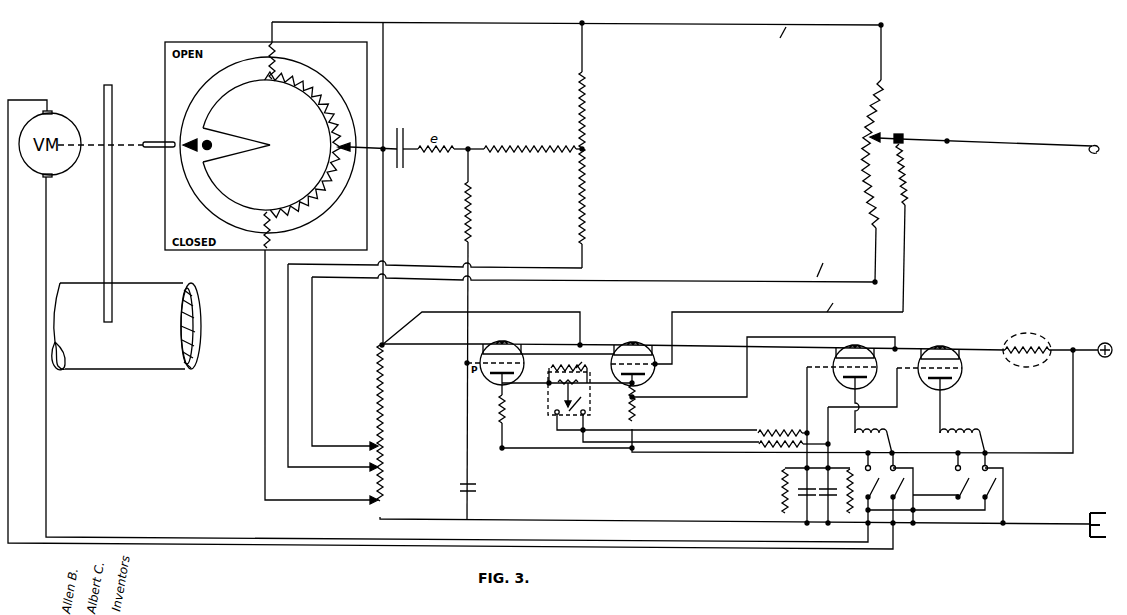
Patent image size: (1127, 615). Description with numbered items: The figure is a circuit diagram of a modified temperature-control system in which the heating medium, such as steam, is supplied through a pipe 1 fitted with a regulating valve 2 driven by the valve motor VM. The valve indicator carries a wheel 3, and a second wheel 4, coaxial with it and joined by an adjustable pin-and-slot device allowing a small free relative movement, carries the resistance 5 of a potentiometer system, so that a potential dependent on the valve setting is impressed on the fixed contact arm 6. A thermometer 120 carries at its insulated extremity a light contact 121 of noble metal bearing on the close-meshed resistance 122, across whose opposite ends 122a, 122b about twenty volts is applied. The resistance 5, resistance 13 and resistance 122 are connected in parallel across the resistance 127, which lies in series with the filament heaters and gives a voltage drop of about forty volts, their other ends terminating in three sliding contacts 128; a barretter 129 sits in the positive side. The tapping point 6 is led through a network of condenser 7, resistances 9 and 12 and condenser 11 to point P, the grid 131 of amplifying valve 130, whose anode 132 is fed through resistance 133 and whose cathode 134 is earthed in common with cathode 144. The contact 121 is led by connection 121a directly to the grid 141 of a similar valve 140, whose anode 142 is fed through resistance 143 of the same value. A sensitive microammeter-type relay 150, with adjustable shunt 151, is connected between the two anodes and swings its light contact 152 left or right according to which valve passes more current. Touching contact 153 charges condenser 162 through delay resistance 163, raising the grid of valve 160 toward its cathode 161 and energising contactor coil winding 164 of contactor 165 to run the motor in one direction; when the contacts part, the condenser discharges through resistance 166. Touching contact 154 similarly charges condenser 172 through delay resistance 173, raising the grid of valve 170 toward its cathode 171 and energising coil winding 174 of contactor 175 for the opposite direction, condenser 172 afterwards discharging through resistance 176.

The pipe 1 is at (126, 326).
The regulating valve 2 is at (114, 203).
The wheel 3 is at (268, 135).
The second wheel 4 is at (206, 140).
The resistance 5 is at (272, 145).
The fixed contact arm 6 is at (347, 152).
The condenser 7 is at (405, 141).
The resistance 9 is at (473, 334).
The condenser 11 is at (477, 489).
The resistance 12 is at (533, 141).
The resistance 13 is at (590, 145).
The thermometer 120 is at (984, 141).
The light contact 121 is at (890, 217).
The connection 121a is at (779, 325).
The resistance 122 is at (855, 154).
The end of resistance 122a is at (785, 41).
The end of resistance 122b is at (825, 262).
The resistance 127 is at (383, 432).
The sliding contacts 128 is at (570, 382).
The barretter 129 is at (1040, 347).
The amplifying valve 130 is at (514, 343).
The grid 131 is at (494, 364).
The anode 132 is at (499, 379).
The resistance 133 is at (499, 413).
The cathode 134 is at (520, 344).
The amplifying valve 140 is at (626, 343).
The grid 141 is at (634, 365).
The anode 142 is at (637, 383).
The resistance 143 is at (638, 413).
The cathode 144 is at (655, 334).
The relay 150 is at (634, 398).
The adjustable shunt 151 is at (568, 368).
The light contact 152 is at (572, 389).
The contact 153 is at (651, 416).
The contact 154 is at (670, 422).
The valve 160 is at (855, 345).
The cathode 161 is at (838, 352).
The condenser 162 is at (803, 486).
The delay resistance 163 is at (782, 430).
The contactor coil winding 164 is at (873, 415).
The contactor 165 is at (926, 482).
The resistance 166 is at (783, 492).
The valve 170 is at (940, 345).
The cathode 171 is at (959, 365).
The condenser 172 is at (832, 486).
The delay resistance 173 is at (783, 450).
The coil winding 174 is at (962, 415).
The contactor 175 is at (993, 456).
The resistance 176 is at (848, 515).